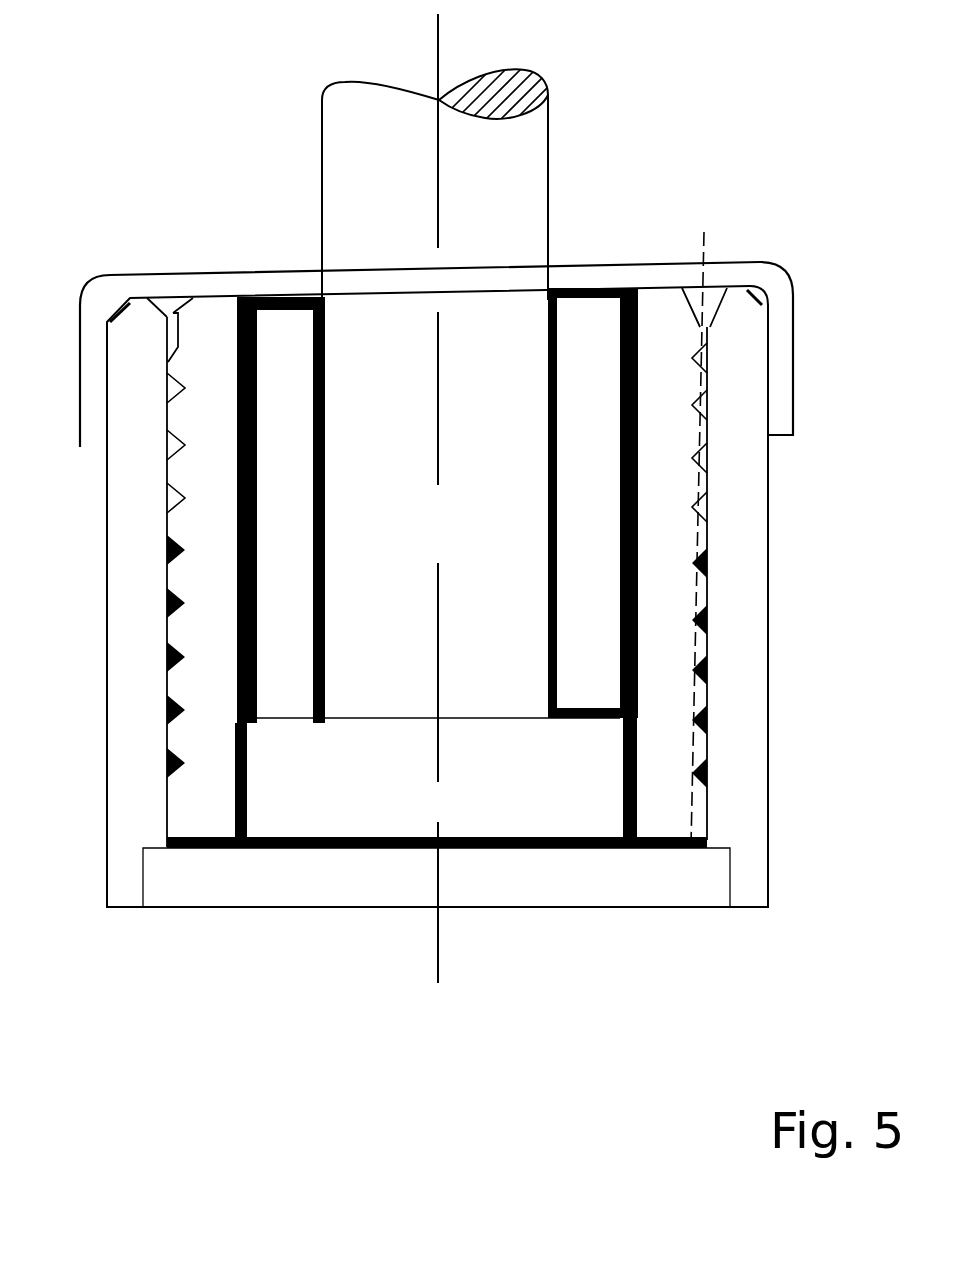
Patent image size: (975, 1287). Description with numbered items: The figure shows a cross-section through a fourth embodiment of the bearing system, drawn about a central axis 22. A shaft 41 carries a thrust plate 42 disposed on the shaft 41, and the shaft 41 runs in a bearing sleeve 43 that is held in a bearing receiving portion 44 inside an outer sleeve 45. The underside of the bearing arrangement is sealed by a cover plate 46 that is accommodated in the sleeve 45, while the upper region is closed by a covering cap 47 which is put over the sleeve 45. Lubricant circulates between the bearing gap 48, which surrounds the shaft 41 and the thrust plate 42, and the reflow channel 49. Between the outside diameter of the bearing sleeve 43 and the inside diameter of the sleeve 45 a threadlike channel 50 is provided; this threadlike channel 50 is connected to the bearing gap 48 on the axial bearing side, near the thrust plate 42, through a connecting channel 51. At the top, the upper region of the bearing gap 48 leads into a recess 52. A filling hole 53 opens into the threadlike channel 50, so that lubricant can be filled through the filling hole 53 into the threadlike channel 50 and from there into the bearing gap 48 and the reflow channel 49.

The central axis line 22 is at (441, 44).
The shaft 41 is at (533, 182).
The thrust plate 42 is at (483, 813).
The bearing sleeve 43 is at (580, 647).
The bearing receiving portion 44 is at (652, 560).
The sleeve 45 is at (752, 493).
The cover plate 46 is at (622, 882).
The covering cap 47 is at (613, 273).
The bearing gap 48 is at (317, 570).
The reflow channel 49 is at (233, 640).
The threadlike channel 50 is at (695, 725).
The connecting channel 51 is at (660, 837).
The recess 52 is at (705, 325).
The filling hole 53 is at (710, 260).